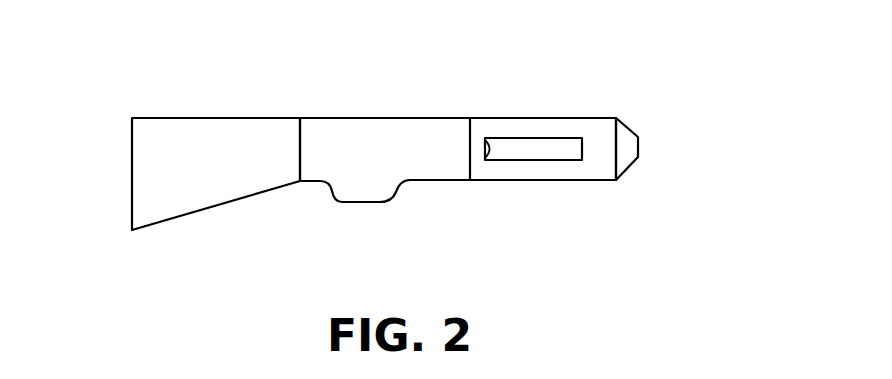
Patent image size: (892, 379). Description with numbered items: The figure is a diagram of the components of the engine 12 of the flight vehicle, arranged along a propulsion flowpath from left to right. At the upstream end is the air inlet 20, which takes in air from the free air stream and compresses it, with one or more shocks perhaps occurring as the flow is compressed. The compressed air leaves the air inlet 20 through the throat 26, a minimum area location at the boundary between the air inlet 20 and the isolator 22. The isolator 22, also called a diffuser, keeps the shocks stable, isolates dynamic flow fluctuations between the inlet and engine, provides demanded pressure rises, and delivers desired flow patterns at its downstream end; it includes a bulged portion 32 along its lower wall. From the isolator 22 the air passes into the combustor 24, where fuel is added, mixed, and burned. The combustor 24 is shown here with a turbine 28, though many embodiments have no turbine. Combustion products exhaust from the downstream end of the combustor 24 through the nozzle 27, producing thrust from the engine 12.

The engine 12 is at (161, 82).
The air inlet 20 is at (200, 118).
The isolator 22 is at (443, 150).
The combustor 24 is at (597, 117).
The throat 26 is at (300, 150).
The nozzle 27 is at (625, 148).
The turbine 28 is at (532, 148).
The bulged portion 32 is at (360, 179).